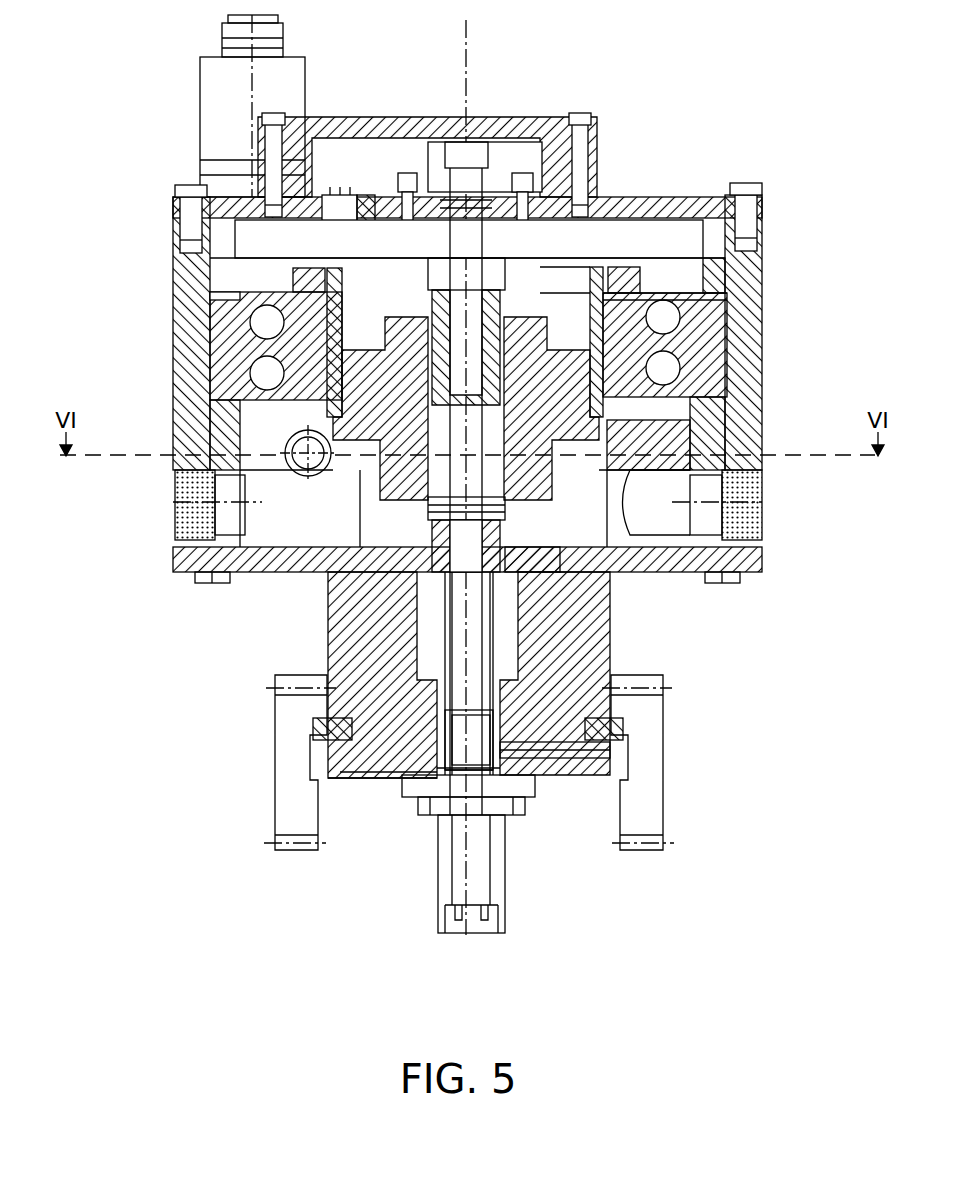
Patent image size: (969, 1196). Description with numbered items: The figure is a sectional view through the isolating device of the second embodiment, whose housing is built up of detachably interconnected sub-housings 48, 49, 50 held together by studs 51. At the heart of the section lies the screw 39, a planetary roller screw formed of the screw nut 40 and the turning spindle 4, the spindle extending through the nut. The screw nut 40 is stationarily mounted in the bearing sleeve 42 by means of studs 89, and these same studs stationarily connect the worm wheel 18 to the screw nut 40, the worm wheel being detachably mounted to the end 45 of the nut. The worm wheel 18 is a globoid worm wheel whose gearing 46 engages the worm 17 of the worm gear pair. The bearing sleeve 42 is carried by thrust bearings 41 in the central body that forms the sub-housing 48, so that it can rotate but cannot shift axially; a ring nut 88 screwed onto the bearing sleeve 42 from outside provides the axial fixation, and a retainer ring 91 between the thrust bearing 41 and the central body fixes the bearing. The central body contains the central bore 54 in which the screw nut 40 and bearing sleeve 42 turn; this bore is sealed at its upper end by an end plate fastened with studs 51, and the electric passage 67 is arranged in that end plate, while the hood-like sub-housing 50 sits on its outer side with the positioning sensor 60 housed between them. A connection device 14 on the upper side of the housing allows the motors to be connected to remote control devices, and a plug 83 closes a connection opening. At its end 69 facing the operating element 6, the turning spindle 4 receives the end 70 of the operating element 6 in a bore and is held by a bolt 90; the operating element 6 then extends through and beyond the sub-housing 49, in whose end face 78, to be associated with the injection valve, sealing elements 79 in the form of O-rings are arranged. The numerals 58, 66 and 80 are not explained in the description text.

The turning spindle 4 is at (690, 448).
The operating element 6 is at (630, 680).
The connection device 14 is at (200, 75).
The worm 17 is at (300, 480).
The worm wheel 18 is at (555, 562).
The screw 39 is at (250, 395).
The screw nut 40 is at (700, 430).
The thrust bearing 41 is at (700, 370).
The bearing sleeve 42 is at (690, 300).
The end 45 is at (290, 450).
The gearing 46 is at (700, 520).
The sub-housing 48 is at (700, 350).
The sub-housing 49 is at (345, 655).
The sub-housing 50 is at (448, 140).
The stud 51 is at (745, 185).
The central bore 54 is at (572, 282).
The plate 58 is at (762, 240).
The positioning sensor 60 is at (488, 165).
The cover 66 is at (560, 135).
The electric passage 67 is at (352, 195).
The end 69 is at (480, 640).
The end 70 is at (445, 560).
The end face 78 is at (375, 777).
The sealing element 79 is at (590, 760).
The clamp arm 80 is at (663, 760).
The plug 83 is at (740, 490).
The ring nut 88 is at (725, 268).
The stud 89 is at (685, 320).
The bolt 90 is at (510, 525).
The retainer ring 91 is at (200, 293).